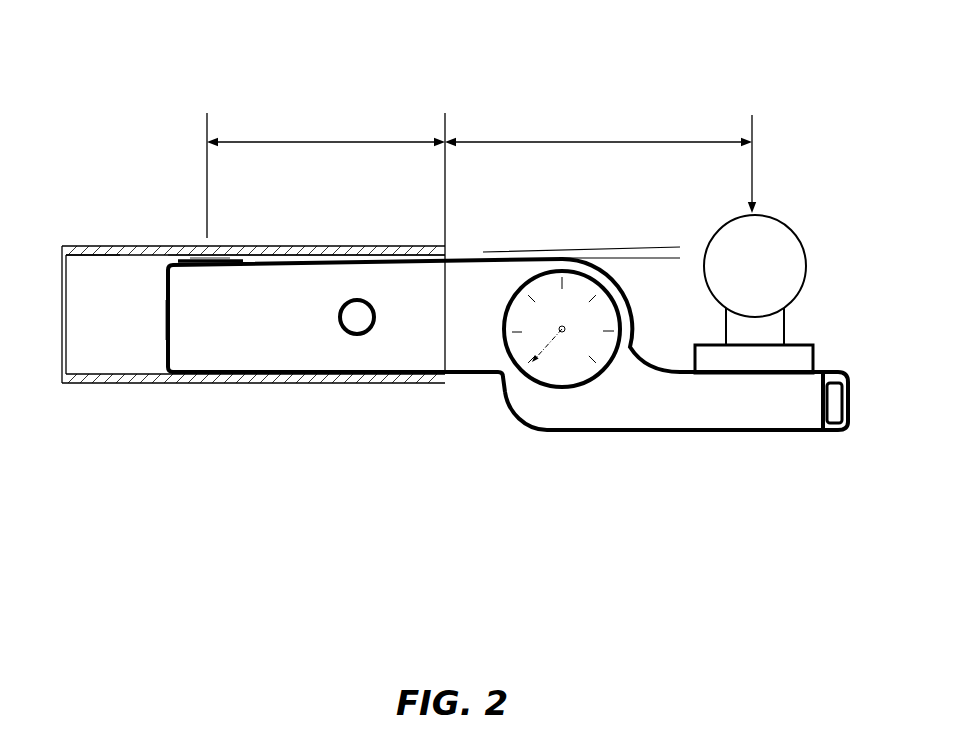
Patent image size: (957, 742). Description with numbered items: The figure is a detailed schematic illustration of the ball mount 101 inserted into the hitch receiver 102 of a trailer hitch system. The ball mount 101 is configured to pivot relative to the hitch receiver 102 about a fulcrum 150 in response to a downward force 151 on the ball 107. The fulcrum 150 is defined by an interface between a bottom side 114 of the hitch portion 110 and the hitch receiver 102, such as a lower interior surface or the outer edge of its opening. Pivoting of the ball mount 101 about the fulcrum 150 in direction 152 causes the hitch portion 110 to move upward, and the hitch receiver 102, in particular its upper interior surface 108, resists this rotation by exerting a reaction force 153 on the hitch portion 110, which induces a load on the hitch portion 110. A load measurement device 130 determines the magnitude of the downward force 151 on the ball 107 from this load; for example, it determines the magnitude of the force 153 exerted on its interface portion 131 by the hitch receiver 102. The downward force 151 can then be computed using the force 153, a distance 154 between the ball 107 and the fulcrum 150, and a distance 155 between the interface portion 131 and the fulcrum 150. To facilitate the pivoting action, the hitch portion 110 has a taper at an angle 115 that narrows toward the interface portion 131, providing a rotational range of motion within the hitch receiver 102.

The ball mount 101 is at (698, 62).
The hitch receiver 102 is at (92, 244).
The ball 107 is at (807, 264).
The upper interior surface 108 is at (86, 268).
The hitch portion 110 is at (297, 352).
The bottom side 114 is at (478, 397).
The angle 115 is at (635, 300).
The load measurement device 130 is at (190, 225).
The interface portion 131 is at (222, 258).
The fulcrum 150 is at (447, 375).
The downward force 151 is at (756, 170).
The direction 152 is at (135, 305).
The reaction force 153 is at (207, 300).
The distance 154 is at (597, 140).
The distance 155 is at (314, 140).